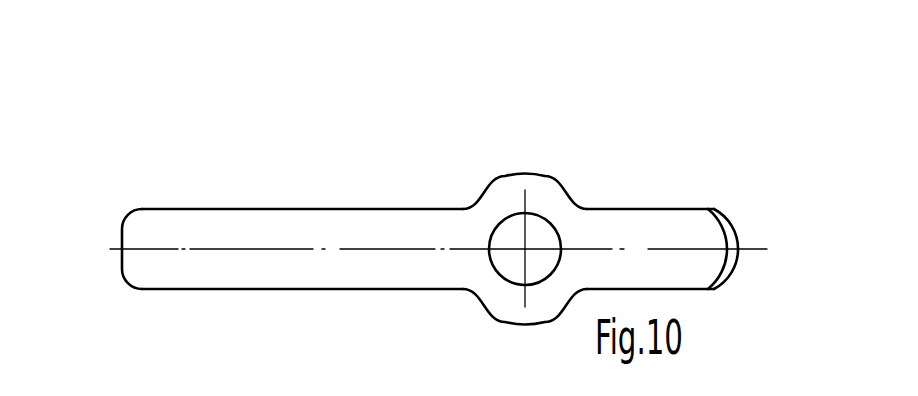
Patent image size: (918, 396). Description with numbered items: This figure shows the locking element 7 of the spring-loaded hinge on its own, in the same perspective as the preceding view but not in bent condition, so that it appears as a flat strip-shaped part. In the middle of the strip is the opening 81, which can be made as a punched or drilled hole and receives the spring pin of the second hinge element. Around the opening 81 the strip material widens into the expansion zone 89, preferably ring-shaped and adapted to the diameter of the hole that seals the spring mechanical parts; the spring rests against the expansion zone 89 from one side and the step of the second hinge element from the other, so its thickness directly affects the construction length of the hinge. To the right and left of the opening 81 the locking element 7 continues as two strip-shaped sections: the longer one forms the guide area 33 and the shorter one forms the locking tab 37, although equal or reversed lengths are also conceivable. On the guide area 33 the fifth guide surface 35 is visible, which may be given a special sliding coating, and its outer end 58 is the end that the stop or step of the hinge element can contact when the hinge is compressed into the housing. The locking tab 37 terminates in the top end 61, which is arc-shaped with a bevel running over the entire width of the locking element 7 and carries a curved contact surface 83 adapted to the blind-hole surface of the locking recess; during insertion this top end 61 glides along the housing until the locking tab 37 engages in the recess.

The locking element 7 is at (200, 146).
The guide area 33 is at (308, 267).
The fifth guide surface 35 is at (247, 225).
The locking tab 37 is at (660, 225).
The end of guide area 58 is at (121, 240).
The top end 61 is at (738, 229).
The opening 81 is at (535, 235).
The contact surface 83 is at (732, 268).
The expansion zone 89 is at (512, 175).